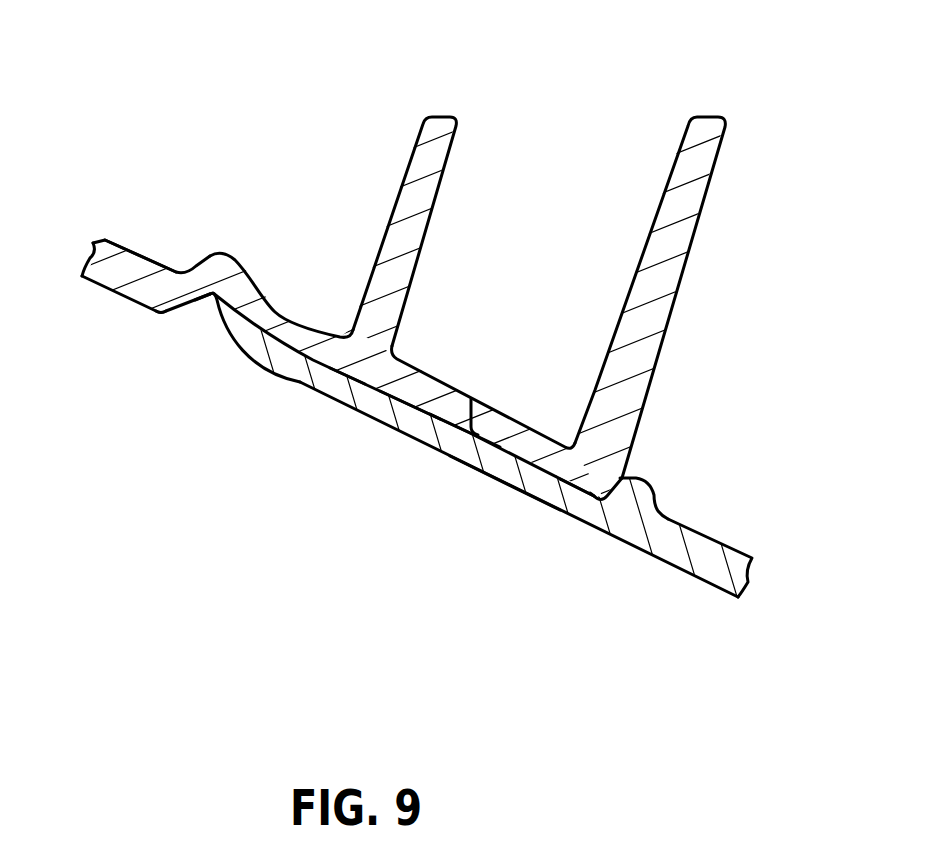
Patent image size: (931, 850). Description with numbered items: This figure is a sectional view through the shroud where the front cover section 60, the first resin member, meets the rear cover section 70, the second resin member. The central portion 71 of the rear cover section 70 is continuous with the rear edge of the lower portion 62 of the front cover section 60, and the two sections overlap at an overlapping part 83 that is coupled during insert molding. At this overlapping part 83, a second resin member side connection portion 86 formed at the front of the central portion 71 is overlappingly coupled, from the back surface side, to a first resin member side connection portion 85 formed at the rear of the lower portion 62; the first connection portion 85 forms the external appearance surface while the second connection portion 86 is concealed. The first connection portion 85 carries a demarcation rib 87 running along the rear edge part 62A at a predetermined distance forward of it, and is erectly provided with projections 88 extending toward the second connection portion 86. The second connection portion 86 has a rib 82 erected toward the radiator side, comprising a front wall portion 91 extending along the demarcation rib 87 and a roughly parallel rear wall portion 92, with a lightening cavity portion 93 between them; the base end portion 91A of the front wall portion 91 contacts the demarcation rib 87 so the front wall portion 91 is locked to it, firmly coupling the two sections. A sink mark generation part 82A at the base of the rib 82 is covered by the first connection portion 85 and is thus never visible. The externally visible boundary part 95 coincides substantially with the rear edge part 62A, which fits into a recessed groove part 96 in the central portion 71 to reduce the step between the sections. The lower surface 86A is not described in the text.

The front cover section 60 is at (696, 582).
The lower portion 62 is at (657, 538).
The rear edge part 62A is at (218, 305).
The rear cover section 70 is at (124, 242).
The central portion 71 is at (152, 275).
The rib 82 is at (708, 110).
The sink mark generation part 82A is at (347, 395).
The overlapping part 83 is at (516, 507).
The first resin member side connection portion 85 is at (466, 452).
The second resin member side connection portion 86 is at (300, 332).
The lower surface 86A is at (417, 410).
The demarcation rib 87 is at (648, 487).
The projections 88 is at (470, 398).
The front wall portion 91 is at (683, 212).
The base end portion 91A is at (606, 490).
The rear wall portion 92 is at (425, 153).
The lightening cavity portion 93 is at (508, 437).
The boundary part 95 is at (180, 317).
The recessed groove part 96 is at (213, 298).